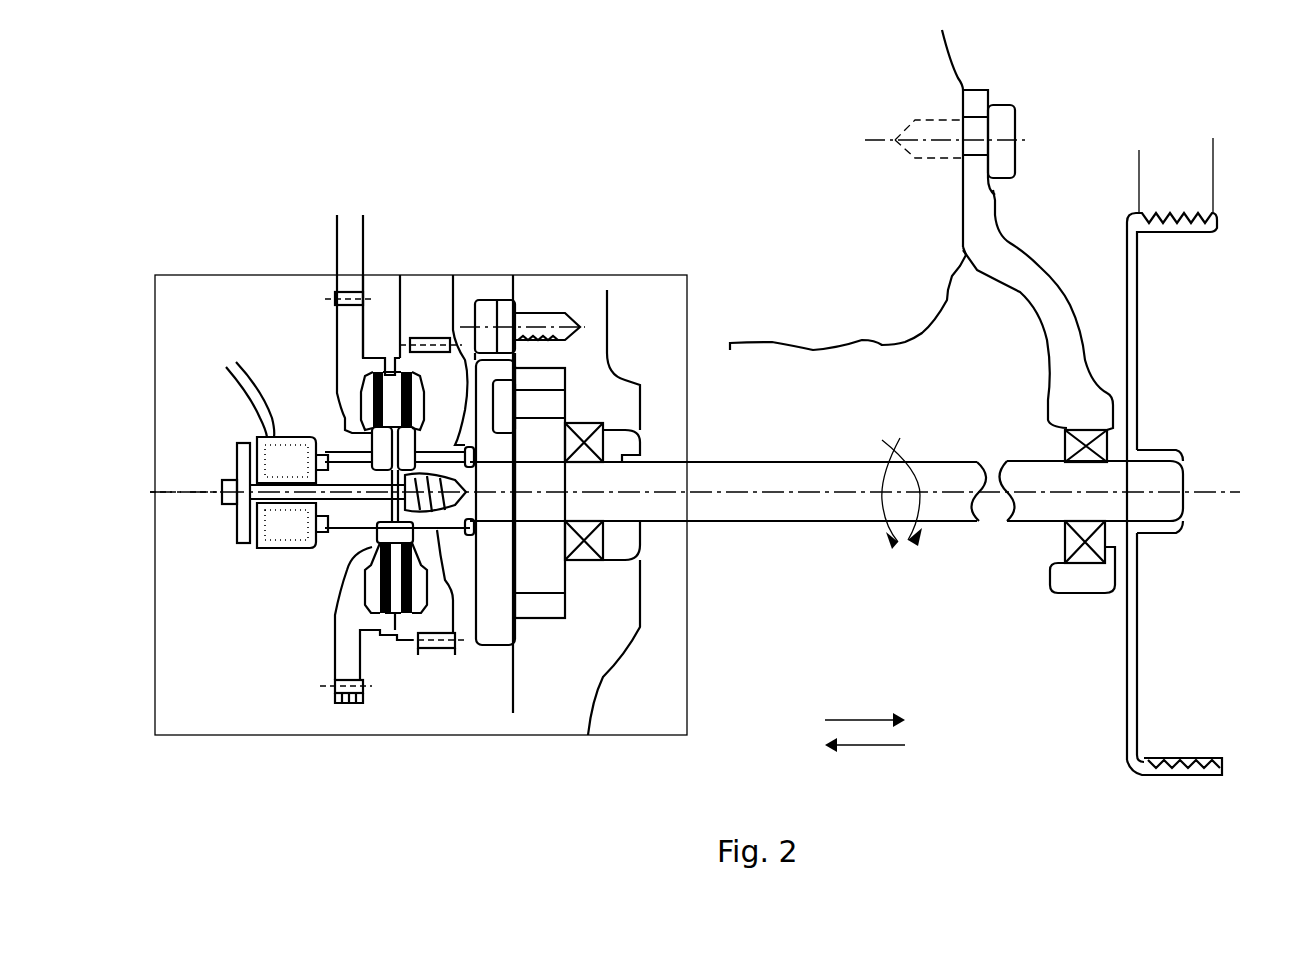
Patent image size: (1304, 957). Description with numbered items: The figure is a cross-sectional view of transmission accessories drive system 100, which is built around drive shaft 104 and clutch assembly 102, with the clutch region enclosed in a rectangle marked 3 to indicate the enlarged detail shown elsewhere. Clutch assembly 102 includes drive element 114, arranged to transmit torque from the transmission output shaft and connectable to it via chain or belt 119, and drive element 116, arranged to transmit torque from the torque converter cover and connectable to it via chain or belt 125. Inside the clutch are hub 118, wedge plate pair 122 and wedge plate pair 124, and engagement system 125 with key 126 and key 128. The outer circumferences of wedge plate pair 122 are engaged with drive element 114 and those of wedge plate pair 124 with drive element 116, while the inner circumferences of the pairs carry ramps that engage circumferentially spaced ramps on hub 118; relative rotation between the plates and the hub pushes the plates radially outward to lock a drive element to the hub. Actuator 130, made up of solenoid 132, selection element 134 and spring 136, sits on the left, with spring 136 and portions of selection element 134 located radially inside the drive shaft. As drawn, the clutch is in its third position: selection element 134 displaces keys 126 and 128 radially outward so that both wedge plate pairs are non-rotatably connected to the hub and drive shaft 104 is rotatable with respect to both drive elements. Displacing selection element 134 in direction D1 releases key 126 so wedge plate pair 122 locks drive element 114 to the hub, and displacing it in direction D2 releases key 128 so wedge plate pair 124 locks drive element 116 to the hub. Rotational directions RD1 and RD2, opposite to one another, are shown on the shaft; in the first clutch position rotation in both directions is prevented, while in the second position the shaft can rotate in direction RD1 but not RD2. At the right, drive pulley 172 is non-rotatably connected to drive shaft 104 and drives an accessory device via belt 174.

The accessories drive system 100 is at (573, 140).
The clutch assembly 102 is at (278, 350).
The drive shaft 104 is at (800, 522).
The drive element 114 is at (335, 340).
The drive element 116 is at (400, 360).
The hub 118 is at (387, 533).
The chain or belt 119 is at (352, 250).
The wedge plate pair 122 is at (370, 599).
The wedge plate pair 124 is at (418, 600).
The chain or belt 125 is at (428, 336).
The key 126 is at (385, 447).
The key 128 is at (418, 447).
The actuator 130 is at (230, 458).
The solenoid 132 is at (278, 548).
The selection element 134 is at (237, 498).
The spring 136 is at (458, 505).
The drive pulley 172 is at (1138, 366).
The belt 174 is at (1183, 172).
The detail reference to FIG. 3 is at (684, 275).
The direction RD1 is at (890, 540).
The direction RD2 is at (918, 450).
The direction D1 is at (864, 720).
The direction D2 is at (864, 745).